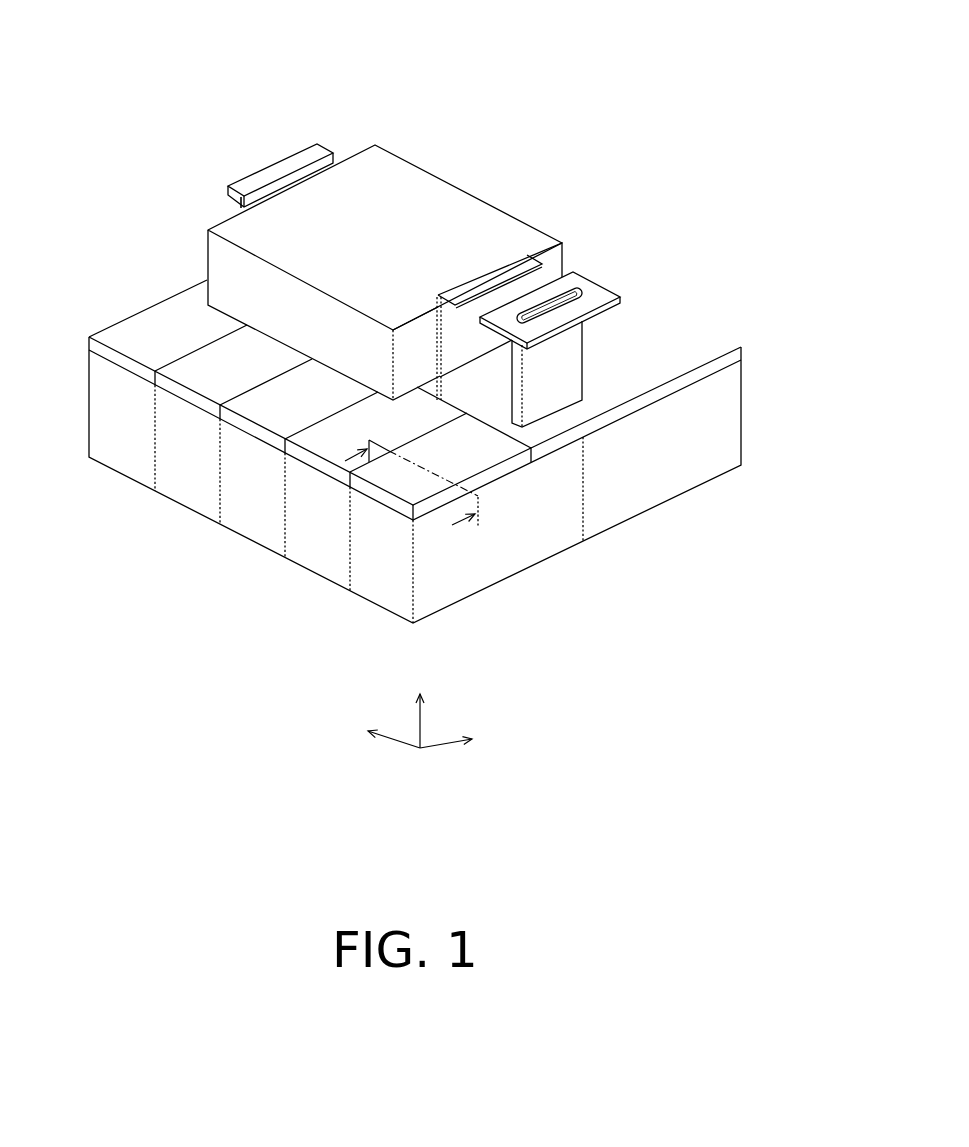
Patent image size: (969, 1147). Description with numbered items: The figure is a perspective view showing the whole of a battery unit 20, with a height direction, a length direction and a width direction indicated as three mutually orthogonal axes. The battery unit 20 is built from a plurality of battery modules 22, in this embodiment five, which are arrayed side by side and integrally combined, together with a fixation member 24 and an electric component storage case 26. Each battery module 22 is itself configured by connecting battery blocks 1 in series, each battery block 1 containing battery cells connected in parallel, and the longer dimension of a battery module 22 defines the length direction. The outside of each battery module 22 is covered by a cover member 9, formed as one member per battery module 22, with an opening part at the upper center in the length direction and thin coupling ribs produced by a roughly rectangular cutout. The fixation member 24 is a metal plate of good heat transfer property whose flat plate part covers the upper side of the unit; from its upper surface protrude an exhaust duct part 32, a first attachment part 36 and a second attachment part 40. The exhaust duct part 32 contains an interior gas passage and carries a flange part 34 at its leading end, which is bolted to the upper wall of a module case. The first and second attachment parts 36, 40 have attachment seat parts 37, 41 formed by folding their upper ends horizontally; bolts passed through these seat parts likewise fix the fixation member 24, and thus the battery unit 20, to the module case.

The battery unit 20 is at (581, 102).
The battery block 1 is at (662, 488).
The cover member 9 is at (136, 326).
The battery module 22 is at (109, 468).
The fixation member 24 is at (603, 387).
The electric component storage case 26 is at (432, 173).
The exhaust duct part 32 is at (587, 332).
The flange part 34 is at (589, 285).
The first attachment part 36 is at (537, 252).
The attachment seat part 37 is at (508, 270).
The second attachment part 40 is at (238, 203).
The attachment seat part 41 is at (275, 172).